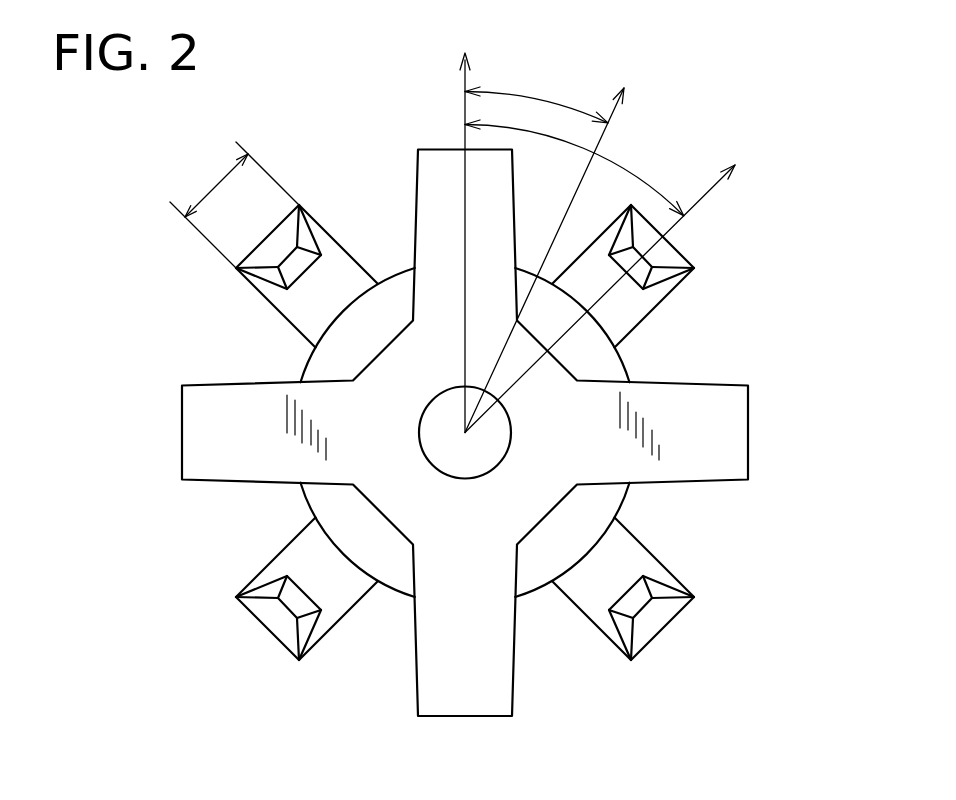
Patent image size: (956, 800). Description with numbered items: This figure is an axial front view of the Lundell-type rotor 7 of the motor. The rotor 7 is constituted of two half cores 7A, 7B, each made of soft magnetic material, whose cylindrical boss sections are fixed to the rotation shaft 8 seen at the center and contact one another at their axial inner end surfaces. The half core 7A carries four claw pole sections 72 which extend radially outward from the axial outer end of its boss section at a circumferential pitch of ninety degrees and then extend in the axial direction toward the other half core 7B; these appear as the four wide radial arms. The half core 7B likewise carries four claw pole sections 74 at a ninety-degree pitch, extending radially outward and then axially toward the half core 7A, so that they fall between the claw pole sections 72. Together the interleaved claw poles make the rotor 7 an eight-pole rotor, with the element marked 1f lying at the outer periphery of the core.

The Lundell-type rotor 7 is at (726, 83).
The half core 7A is at (472, 728).
The half core 7B is at (659, 663).
The rotation shaft 8 is at (449, 455).
The rotor core outer surface 1f is at (603, 498).
The claw pole section 72 is at (442, 158).
The claw pole section 74 is at (277, 237).